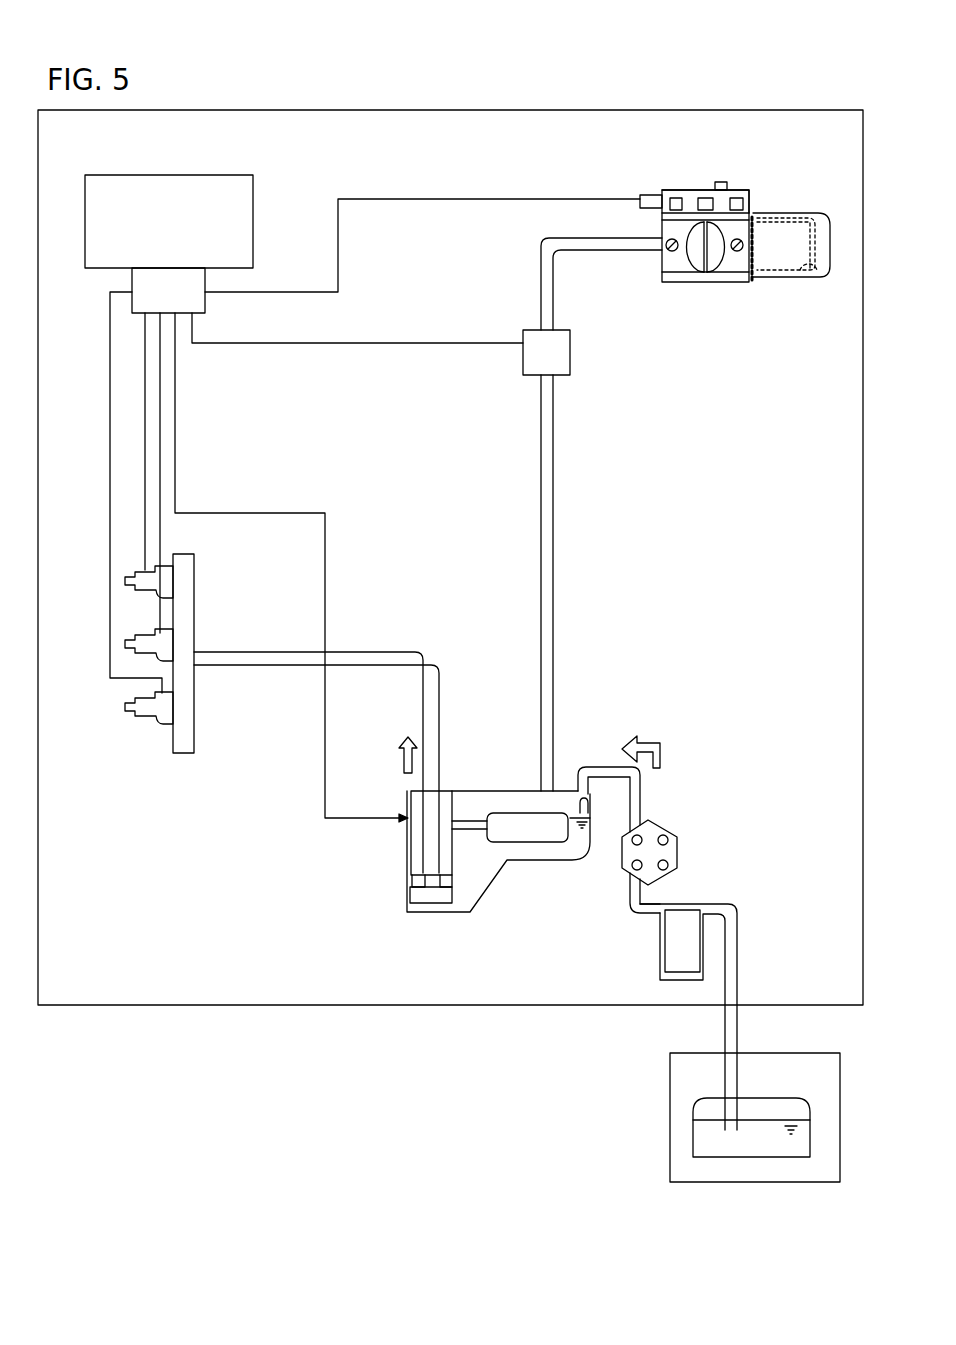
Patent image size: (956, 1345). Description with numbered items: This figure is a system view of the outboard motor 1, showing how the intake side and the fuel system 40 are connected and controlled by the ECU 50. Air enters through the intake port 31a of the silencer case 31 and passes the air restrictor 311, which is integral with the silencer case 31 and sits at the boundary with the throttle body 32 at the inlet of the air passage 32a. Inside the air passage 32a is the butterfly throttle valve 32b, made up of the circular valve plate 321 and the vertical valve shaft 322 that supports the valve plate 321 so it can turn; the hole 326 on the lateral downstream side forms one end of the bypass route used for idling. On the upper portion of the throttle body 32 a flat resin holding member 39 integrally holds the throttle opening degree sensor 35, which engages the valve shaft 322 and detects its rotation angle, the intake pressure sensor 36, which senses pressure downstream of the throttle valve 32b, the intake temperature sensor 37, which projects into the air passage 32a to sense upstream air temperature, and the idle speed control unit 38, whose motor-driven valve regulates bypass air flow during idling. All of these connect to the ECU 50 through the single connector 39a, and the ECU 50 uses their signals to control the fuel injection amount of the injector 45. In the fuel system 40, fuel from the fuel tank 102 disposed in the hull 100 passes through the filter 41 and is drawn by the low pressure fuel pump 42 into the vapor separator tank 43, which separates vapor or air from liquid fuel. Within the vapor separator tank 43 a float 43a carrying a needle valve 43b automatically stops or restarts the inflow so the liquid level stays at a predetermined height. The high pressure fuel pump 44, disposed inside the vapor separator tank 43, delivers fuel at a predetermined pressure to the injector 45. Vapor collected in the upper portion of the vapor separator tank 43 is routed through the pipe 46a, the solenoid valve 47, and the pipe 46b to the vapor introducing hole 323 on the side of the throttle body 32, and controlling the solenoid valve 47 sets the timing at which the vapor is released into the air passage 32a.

The outboard motor 1 is at (238, 1005).
The silencer case 31 is at (803, 254).
The intake port 31a is at (828, 279).
The air restrictor 311 is at (758, 248).
The throttle body 32 is at (688, 260).
The air passage 32a is at (753, 215).
The throttle valve 32b is at (708, 313).
The valve plate 321 is at (690, 250).
The valve shaft 322 is at (716, 246).
The vapor introducing hole 323 is at (748, 268).
The hole 326 is at (667, 250).
The throttle opening degree sensor 35 is at (706, 198).
The intake pressure sensor 36 is at (749, 212).
The intake temperature sensor 37 is at (678, 198).
The idle speed control unit 38 is at (720, 182).
The holding member 39 is at (738, 198).
The connector 39a is at (650, 194).
The fuel system 40 is at (333, 852).
The filter 41 is at (660, 958).
The low pressure fuel pump 42 is at (678, 855).
The vapor separator tank 43 is at (520, 862).
The float 43a is at (552, 829).
The needle valve 43b is at (576, 805).
The high pressure fuel pump 44 is at (428, 850).
The injector 45 is at (125, 581).
The pipe 46a is at (553, 510).
The pipe 46b is at (541, 281).
The solenoid valve 47 is at (558, 365).
The ECU 50 is at (253, 213).
The hull 100 is at (670, 1073).
The fuel tank 102 is at (693, 1137).